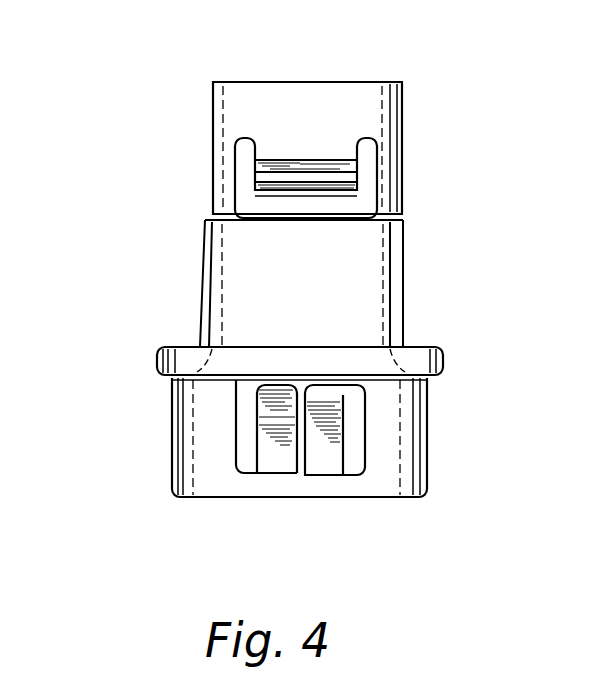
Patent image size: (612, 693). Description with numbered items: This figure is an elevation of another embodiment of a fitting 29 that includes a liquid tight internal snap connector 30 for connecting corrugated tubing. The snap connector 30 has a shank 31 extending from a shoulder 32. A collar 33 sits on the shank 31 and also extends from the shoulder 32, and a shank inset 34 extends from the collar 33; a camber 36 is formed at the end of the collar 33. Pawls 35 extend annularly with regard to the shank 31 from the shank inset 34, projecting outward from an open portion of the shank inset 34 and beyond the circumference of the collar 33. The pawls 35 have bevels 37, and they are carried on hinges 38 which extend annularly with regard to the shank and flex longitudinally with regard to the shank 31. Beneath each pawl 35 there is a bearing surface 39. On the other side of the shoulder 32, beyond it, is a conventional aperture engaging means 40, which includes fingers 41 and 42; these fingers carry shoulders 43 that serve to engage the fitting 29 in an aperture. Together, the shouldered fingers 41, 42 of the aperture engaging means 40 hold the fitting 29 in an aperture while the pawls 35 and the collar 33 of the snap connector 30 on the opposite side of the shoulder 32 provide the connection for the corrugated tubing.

The fitting 29 is at (413, 130).
The snap connector 30 is at (415, 312).
The shank 31 is at (330, 125).
The shoulder 32 is at (435, 353).
The collar 33 is at (400, 275).
The shank inset 34 is at (398, 165).
The pawls 35 is at (278, 170).
The camber 36 is at (403, 218).
The bevels 37 is at (342, 170).
The hinges 38 is at (300, 132).
The bearing surfaces 39 is at (307, 183).
The aperture engaging means 40 is at (332, 480).
The finger 41 is at (272, 453).
The finger 42 is at (343, 457).
The shoulders 43 is at (305, 392).